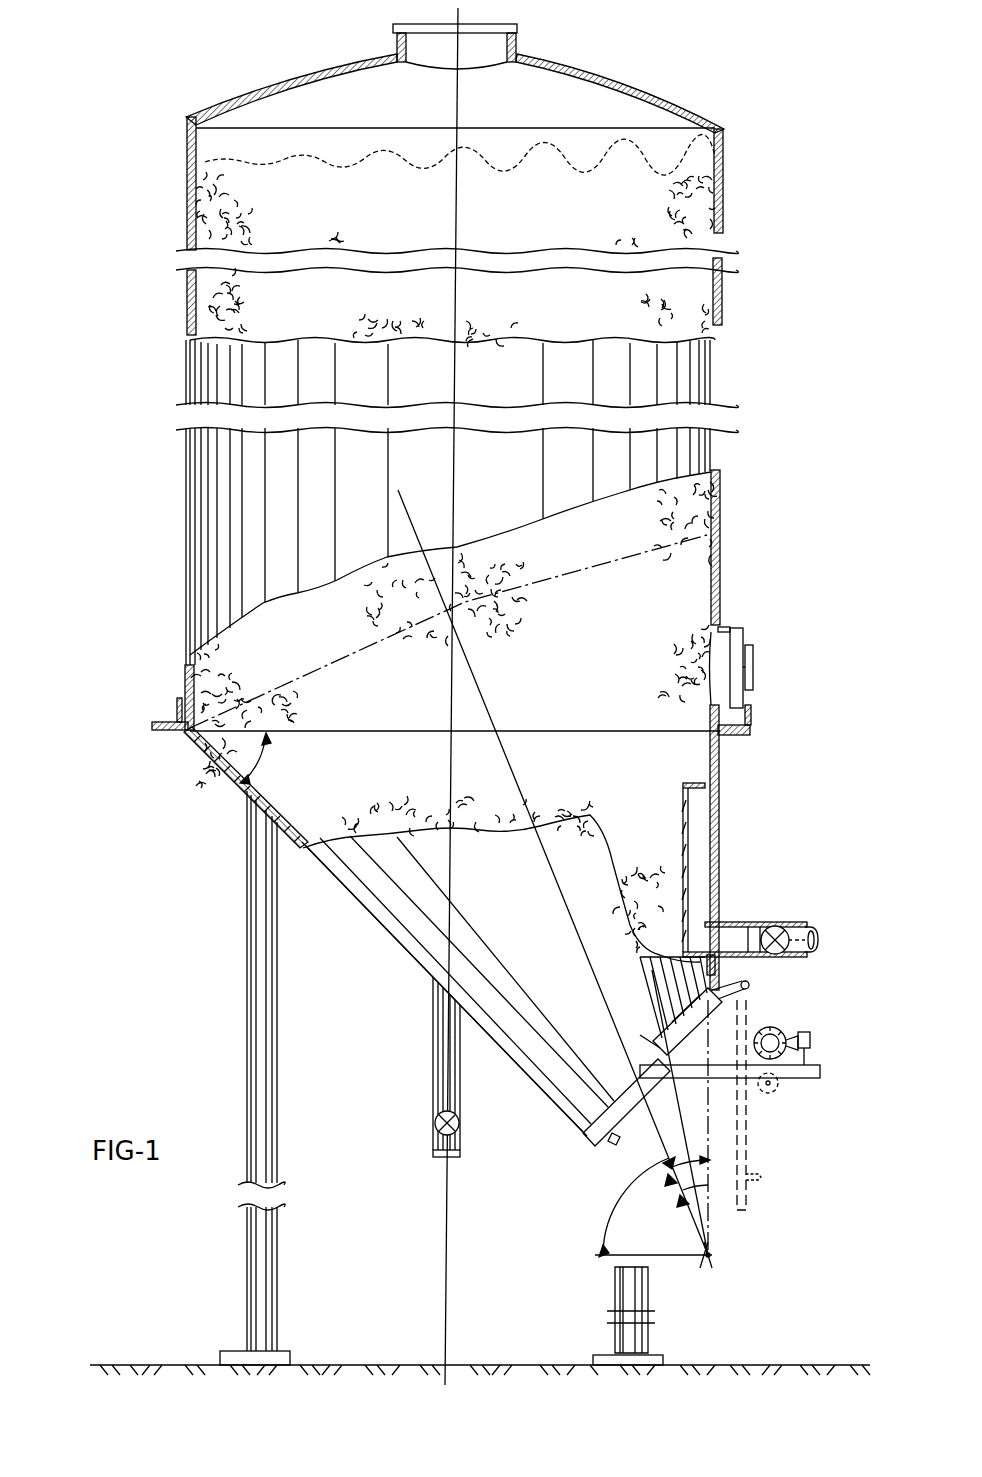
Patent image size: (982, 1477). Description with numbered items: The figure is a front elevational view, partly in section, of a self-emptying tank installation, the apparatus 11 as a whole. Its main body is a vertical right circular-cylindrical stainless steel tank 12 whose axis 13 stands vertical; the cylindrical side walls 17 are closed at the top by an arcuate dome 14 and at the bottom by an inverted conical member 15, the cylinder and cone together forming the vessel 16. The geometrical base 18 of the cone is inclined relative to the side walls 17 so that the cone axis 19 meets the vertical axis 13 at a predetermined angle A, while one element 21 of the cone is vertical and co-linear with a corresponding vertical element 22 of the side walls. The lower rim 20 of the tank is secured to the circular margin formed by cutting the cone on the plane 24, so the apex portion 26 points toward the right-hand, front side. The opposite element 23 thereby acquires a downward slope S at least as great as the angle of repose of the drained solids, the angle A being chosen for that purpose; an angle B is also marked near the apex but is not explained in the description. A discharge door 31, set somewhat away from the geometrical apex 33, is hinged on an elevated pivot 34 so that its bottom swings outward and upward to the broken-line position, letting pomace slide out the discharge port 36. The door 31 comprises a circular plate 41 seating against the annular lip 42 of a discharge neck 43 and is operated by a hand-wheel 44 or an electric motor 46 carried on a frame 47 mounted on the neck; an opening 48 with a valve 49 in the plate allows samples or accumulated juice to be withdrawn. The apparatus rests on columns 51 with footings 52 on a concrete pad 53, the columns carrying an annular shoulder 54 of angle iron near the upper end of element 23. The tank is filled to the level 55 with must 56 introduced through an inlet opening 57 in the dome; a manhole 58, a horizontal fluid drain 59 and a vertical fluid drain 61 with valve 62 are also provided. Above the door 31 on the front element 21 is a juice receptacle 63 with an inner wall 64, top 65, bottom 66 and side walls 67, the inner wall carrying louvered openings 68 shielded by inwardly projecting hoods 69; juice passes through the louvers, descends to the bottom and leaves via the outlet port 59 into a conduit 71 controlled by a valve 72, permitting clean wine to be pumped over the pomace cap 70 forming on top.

The apparatus 11 is at (762, 165).
The tank 12 is at (723, 345).
The axis 13 is at (456, 100).
The dome 14 is at (604, 78).
The inverted conical member 15 is at (499, 1110).
The vessel 16 is at (722, 485).
The vertical side walls 17 is at (186, 210).
The geometrical base 18 is at (322, 678).
The axis of the cone 19 is at (470, 663).
The lower rim 20 is at (712, 740).
The vertical element of the cone 21 is at (708, 552).
The vertical element of the side walls 22 is at (712, 290).
The sloped cone element 23 is at (275, 818).
The plane 24 is at (608, 735).
The apex portion 26 is at (458, 987).
The discharge door 31 is at (670, 1022).
The geometrical apex 33 is at (714, 1252).
The elevated pivot 34 is at (750, 985).
The discharge port 36 is at (672, 1045).
The circular plate 41 is at (748, 1165).
The annular lip 42 is at (740, 1010).
The discharge neck 43 is at (692, 1025).
The hand-wheel 44 is at (762, 1088).
The electric motor 46 is at (790, 1040).
The frame 47 is at (788, 1068).
The opening 48 is at (625, 1125).
The valve 49 is at (622, 1140).
The columns 51 is at (248, 1012).
The footings 52 is at (228, 1351).
The concrete pad 53 is at (357, 1365).
The annular shoulder 54 is at (155, 722).
The level 55 is at (519, 128).
The must 56 is at (453, 528).
The inlet opening 57 is at (512, 45).
The manhole 58 is at (728, 635).
The horizontal fluid drain 59 is at (722, 925).
The vertical fluid drain 61 is at (433, 1015).
The valve 62 is at (435, 1120).
The juice receptacle 63 is at (683, 792).
The inner wall 64 is at (680, 825).
The top 65 is at (688, 780).
The bottom 66 is at (695, 955).
The side walls 67 is at (706, 803).
The louvered openings 68 is at (688, 849).
The hoods 69 is at (680, 848).
The pomace cap 70 is at (593, 179).
The conduit 71 is at (800, 925).
The valve 72 is at (778, 926).
The predetermined angle A is at (452, 692).
The angle B is at (698, 1190).
The downward slope S is at (607, 1232).